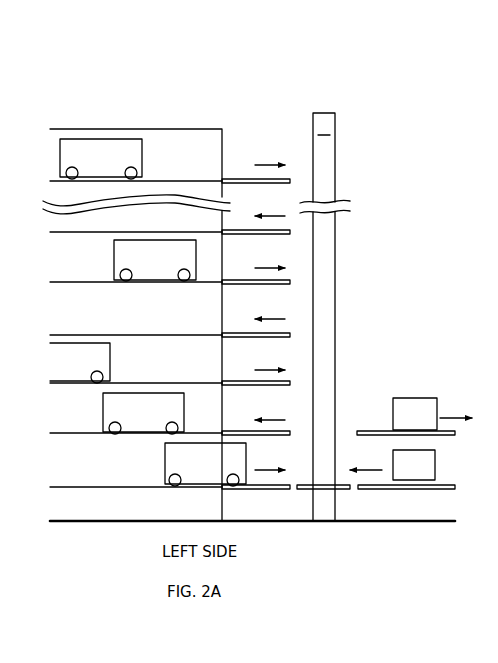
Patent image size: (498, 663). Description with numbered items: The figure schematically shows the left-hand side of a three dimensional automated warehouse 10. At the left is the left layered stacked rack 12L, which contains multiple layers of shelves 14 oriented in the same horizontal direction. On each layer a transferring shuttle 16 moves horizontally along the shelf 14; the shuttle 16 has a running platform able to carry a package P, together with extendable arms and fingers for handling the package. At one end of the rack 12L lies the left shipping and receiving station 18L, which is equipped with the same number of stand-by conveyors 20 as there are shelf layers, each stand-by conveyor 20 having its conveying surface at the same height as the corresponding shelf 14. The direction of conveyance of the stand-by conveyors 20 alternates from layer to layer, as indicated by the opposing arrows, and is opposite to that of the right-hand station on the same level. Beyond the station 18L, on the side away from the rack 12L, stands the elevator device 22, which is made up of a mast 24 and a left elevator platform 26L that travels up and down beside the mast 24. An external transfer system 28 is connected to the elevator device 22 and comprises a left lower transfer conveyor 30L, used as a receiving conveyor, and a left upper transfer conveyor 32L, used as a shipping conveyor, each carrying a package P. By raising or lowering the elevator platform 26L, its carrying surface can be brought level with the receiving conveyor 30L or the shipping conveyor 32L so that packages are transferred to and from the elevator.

The three dimensional automated warehouse 10 is at (305, 87).
The left layered stacked rack 12L is at (207, 125).
The shelf 14 is at (173, 333).
The transferring shuttle 16 is at (113, 145).
The left shipping and receiving station 18L is at (252, 143).
The stand-by conveyor 20 is at (288, 237).
The elevator device 22 is at (335, 145).
The mast 24 is at (327, 172).
The left elevator platform 26L is at (353, 488).
The external transfer system 28 is at (417, 357).
The package P is at (413, 408).
The left lower transfer conveyor 30L is at (447, 487).
The left upper transfer conveyor 32L is at (447, 437).